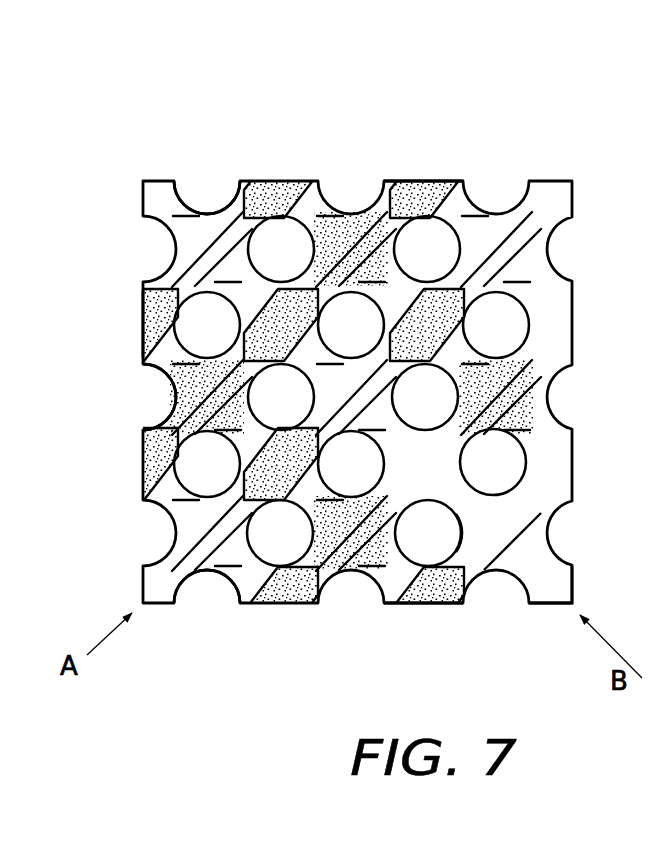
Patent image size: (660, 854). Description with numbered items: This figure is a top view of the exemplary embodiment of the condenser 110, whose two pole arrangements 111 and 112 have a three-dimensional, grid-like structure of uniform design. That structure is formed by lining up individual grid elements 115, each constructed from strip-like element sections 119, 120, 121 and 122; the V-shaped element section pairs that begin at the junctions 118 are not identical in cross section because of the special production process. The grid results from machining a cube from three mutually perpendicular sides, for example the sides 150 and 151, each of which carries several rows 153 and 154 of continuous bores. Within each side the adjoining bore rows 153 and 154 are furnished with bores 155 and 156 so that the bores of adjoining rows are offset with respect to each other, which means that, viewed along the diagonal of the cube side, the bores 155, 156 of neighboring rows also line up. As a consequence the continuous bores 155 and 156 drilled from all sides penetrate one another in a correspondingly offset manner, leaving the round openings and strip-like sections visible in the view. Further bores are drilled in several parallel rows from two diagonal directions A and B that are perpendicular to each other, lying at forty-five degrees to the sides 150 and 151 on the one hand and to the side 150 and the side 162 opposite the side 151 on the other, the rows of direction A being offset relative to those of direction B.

The condenser 110 is at (534, 119).
The pole arrangement 111 is at (133, 168).
The pole arrangement 112 is at (425, 175).
The grid element 115 is at (346, 214).
The junction 118 is at (505, 527).
The strip-like element section 119 is at (420, 595).
The strip-like element section 120 is at (520, 512).
The strip-like element section 121 is at (458, 507).
The strip-like element section 122 is at (558, 578).
The side 150 is at (122, 398).
The side 151 is at (217, 628).
The bore row 153 is at (412, 548).
The bore row 154 is at (500, 330).
The bore 155 is at (452, 549).
The bore 156 is at (510, 338).
The side 162 is at (225, 158).